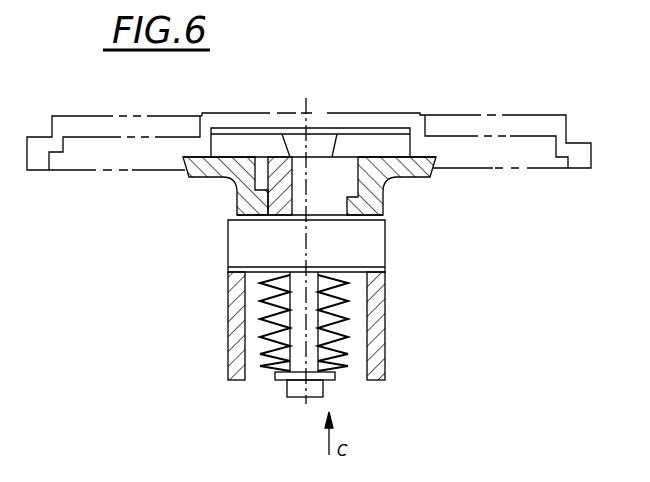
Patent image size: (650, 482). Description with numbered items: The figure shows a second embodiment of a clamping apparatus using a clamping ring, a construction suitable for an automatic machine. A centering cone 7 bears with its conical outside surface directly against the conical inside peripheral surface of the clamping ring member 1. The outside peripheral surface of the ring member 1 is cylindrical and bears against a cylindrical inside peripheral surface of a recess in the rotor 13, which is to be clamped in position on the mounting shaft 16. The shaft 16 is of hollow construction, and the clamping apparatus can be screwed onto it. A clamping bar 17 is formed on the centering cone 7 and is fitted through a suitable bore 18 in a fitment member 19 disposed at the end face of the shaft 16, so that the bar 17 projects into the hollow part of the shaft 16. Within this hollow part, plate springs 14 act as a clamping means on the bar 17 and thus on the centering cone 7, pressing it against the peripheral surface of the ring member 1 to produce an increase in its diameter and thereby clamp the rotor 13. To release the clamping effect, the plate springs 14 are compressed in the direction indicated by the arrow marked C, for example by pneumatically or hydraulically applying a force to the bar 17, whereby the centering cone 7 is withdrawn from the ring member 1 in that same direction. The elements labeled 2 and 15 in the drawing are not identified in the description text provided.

The clamping ring member 1 is at (370, 143).
The seal ring 2 is at (307, 205).
The centering cone 7 is at (295, 142).
The rotor 13 is at (523, 119).
The plate springs 14 is at (343, 332).
The flange 15 is at (373, 199).
The mounting shaft 16 is at (370, 247).
The clamping bar 17 is at (310, 350).
The bore 18 is at (283, 186).
The fitment member 19 is at (280, 208).